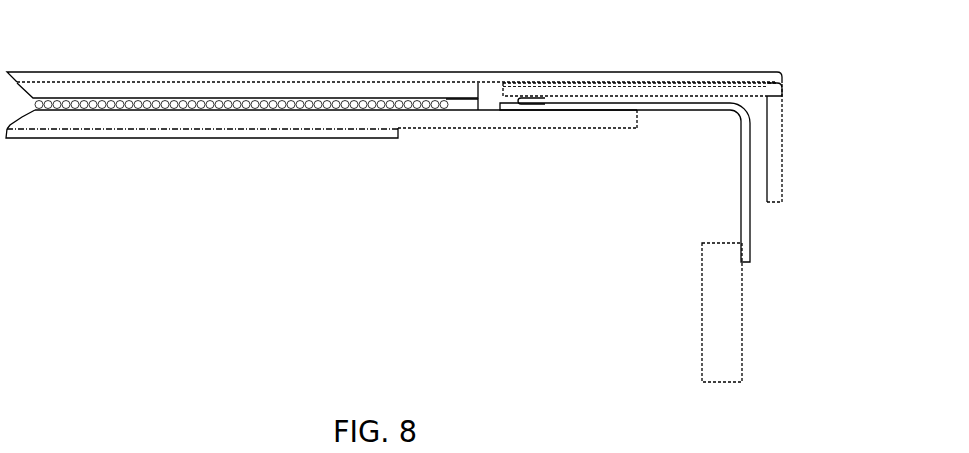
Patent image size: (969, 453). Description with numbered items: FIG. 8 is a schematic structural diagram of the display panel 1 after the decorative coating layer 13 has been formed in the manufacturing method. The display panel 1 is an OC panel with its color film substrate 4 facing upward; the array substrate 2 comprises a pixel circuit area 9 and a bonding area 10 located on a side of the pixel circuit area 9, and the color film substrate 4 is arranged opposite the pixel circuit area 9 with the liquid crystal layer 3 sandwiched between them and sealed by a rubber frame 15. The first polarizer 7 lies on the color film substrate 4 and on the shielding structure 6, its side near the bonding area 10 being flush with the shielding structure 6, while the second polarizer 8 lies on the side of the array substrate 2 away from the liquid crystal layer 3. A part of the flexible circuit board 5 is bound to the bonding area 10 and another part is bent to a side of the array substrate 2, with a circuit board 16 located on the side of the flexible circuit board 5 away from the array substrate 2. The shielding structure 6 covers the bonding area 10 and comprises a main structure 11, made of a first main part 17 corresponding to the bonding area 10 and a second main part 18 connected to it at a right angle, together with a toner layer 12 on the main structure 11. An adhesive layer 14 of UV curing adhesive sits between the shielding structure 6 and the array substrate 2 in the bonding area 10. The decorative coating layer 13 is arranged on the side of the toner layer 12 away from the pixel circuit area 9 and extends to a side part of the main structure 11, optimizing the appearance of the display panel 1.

The display panel 1 is at (394, 135).
The array substrate 2 is at (192, 119).
The liquid crystal layer 3 is at (233, 103).
The color film substrate 4 is at (278, 88).
The flexible circuit board 5 is at (747, 213).
The shielding structure 6 is at (642, 181).
The first polarizer 7 is at (339, 74).
The second polarizer 8 is at (202, 190).
The pixel circuit area 9 is at (394, 135).
The bonding area 10 is at (567, 134).
The main structure 11 is at (642, 160).
The toner layer 12 is at (577, 84).
The decorative coating layer 13 is at (780, 90).
The adhesive layer 14 is at (529, 104).
The rubber frame 15 is at (457, 107).
The circuit board 16 is at (717, 297).
The first main part 17 is at (620, 89).
The second main part 18 is at (773, 138).